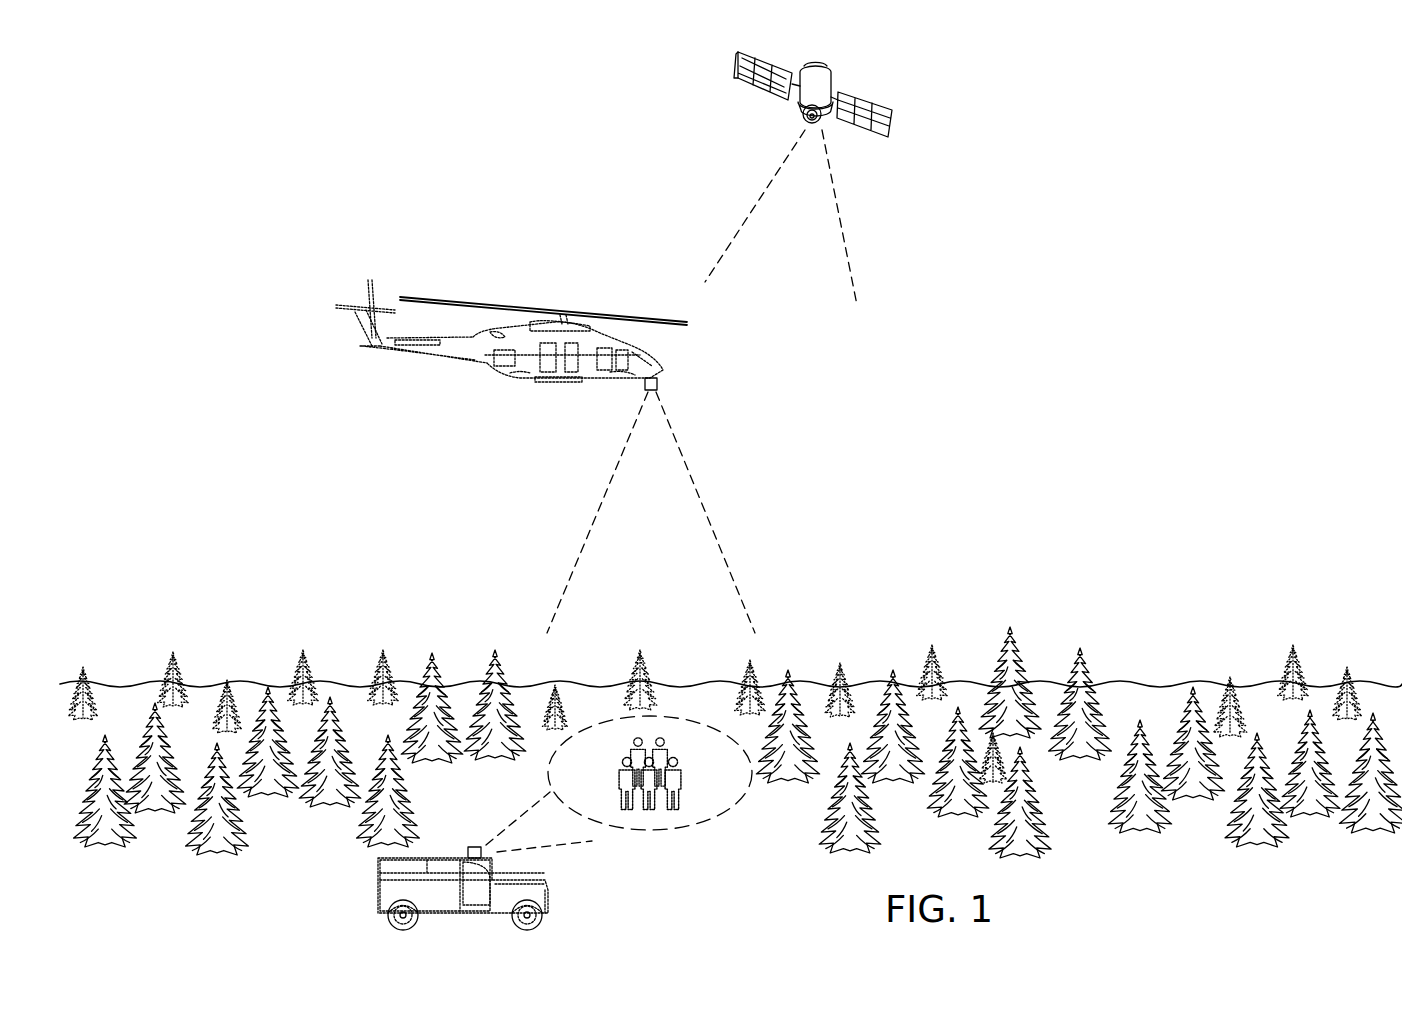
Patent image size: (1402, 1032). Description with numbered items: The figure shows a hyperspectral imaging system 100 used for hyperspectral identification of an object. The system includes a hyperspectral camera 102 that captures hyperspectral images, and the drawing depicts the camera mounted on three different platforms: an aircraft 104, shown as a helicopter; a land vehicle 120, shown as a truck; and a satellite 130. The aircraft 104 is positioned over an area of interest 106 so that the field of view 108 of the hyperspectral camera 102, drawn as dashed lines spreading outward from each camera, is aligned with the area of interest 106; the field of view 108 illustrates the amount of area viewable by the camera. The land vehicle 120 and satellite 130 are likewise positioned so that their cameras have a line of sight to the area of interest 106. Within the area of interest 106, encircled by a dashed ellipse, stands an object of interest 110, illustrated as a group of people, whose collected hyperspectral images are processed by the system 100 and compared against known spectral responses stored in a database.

The hyperspectral imaging system 100 is at (428, 95).
The hyperspectral camera 102 is at (820, 68).
The aircraft 104 is at (458, 386).
The area of interest 106 is at (657, 831).
The field of view 108 is at (846, 224).
The object of interest 110 is at (683, 797).
The land vehicle 120 is at (375, 886).
The satellite 130 is at (716, 58).